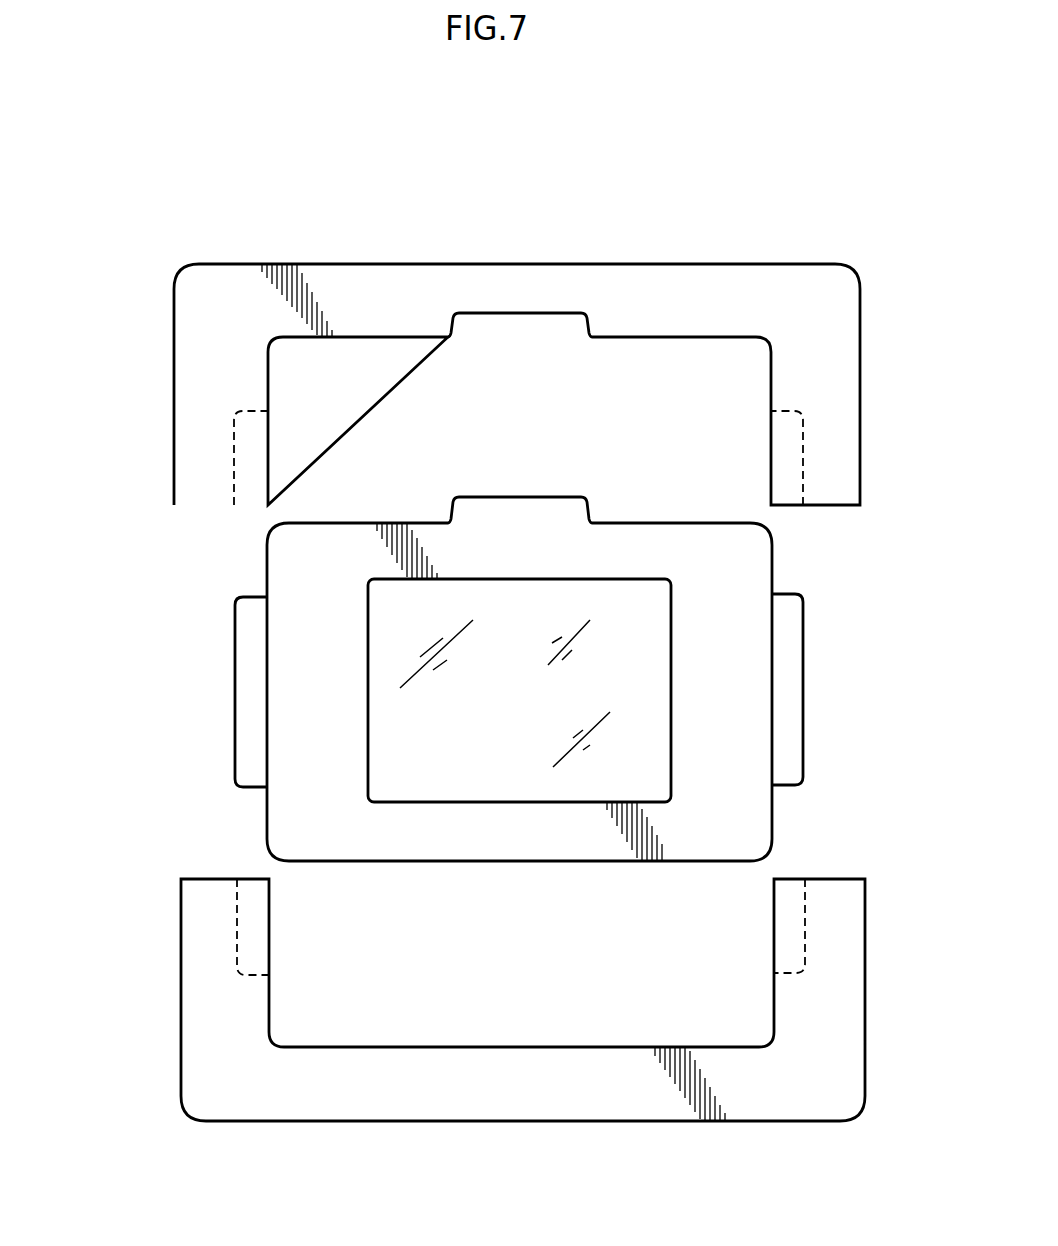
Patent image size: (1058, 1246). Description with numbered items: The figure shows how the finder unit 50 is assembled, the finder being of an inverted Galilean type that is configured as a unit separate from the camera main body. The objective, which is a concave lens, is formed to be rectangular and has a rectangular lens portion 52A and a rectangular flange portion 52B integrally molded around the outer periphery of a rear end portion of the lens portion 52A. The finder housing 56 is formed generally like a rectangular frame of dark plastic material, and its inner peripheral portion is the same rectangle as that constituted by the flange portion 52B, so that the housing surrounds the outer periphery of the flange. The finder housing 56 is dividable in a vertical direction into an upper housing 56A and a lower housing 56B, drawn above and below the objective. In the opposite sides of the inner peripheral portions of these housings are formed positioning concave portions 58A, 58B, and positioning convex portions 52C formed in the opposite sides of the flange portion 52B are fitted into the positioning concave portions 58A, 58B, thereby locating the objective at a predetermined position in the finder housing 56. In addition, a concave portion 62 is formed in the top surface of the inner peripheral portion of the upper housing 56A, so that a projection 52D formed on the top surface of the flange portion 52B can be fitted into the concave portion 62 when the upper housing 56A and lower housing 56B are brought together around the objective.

The finder unit 50 is at (161, 278).
The finder housing 56 is at (668, 280).
The upper housing 56A is at (345, 285).
The lower housing 56B is at (222, 878).
The positioning concave portion 58A is at (235, 458).
The positioning concave portion 58B is at (240, 950).
The concave portion 62 is at (478, 318).
The lens portion 52A is at (510, 770).
The flange portion 52B is at (607, 840).
The positioning convex portion 52C is at (253, 610).
The projection 52D is at (513, 517).